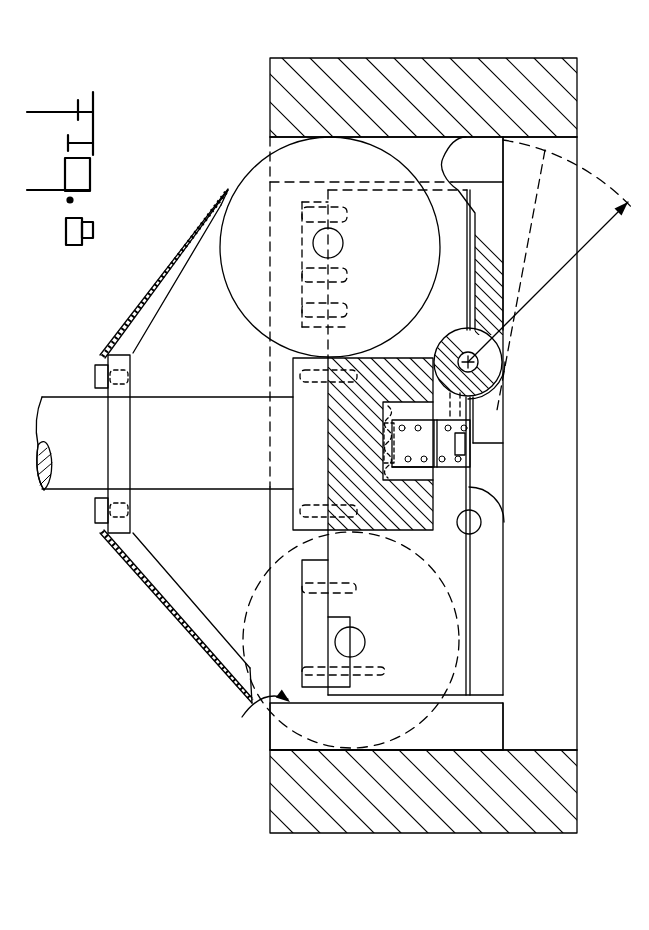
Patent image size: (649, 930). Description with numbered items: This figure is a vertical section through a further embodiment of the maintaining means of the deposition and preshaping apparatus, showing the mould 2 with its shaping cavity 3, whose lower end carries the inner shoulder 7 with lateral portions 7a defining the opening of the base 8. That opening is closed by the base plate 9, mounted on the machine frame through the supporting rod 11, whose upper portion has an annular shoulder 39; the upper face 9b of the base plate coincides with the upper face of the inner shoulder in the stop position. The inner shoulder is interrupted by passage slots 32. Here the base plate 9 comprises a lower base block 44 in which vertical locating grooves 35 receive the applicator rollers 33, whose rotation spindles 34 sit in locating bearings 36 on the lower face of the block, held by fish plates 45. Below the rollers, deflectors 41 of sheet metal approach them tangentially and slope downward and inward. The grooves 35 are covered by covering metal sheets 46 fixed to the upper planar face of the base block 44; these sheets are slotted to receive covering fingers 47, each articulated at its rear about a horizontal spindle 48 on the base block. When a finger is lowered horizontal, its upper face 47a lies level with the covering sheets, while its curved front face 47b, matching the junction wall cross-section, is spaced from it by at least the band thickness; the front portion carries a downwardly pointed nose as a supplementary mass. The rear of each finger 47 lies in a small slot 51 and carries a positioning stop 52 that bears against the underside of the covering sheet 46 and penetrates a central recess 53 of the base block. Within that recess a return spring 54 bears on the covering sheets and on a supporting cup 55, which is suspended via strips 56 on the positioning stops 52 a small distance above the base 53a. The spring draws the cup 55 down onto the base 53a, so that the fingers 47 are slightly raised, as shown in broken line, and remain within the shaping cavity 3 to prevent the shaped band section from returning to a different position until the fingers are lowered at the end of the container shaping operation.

The mould 2 is at (578, 120).
The shaping cavity 3 is at (526, 663).
The inner shoulder 7 is at (478, 727).
The lateral portions of inner shoulder 7a is at (508, 726).
The base opening 8 is at (247, 713).
The base plate 9 is at (540, 484).
The upper face of base plate 9b is at (508, 600).
The supporting rod 11 is at (72, 397).
The passage slots 32 is at (408, 148).
The applicator rollers 33 is at (263, 160).
The rotation spindles 34 is at (346, 243).
The locating grooves 35 is at (433, 316).
The locating bearings 36 is at (365, 640).
The annular shoulder 39 is at (120, 492).
The deflectors 41 is at (193, 235).
The base block 44 is at (404, 532).
The fish plates 45 is at (310, 250).
The covering metal sheets 46 is at (496, 407).
The covering fingers 47 is at (463, 155).
The upper face of covering finger 47a is at (512, 158).
The front face of covering finger 47b is at (448, 146).
The horizontal spindle 48 is at (480, 362).
The small slot 51 is at (442, 362).
The positioning stop 52 is at (482, 438).
The central recess 53 is at (393, 365).
The base of central recess 53a is at (376, 455).
The return spring 54 is at (408, 462).
The supporting cup 55 is at (383, 428).
The strips 56 is at (412, 408).